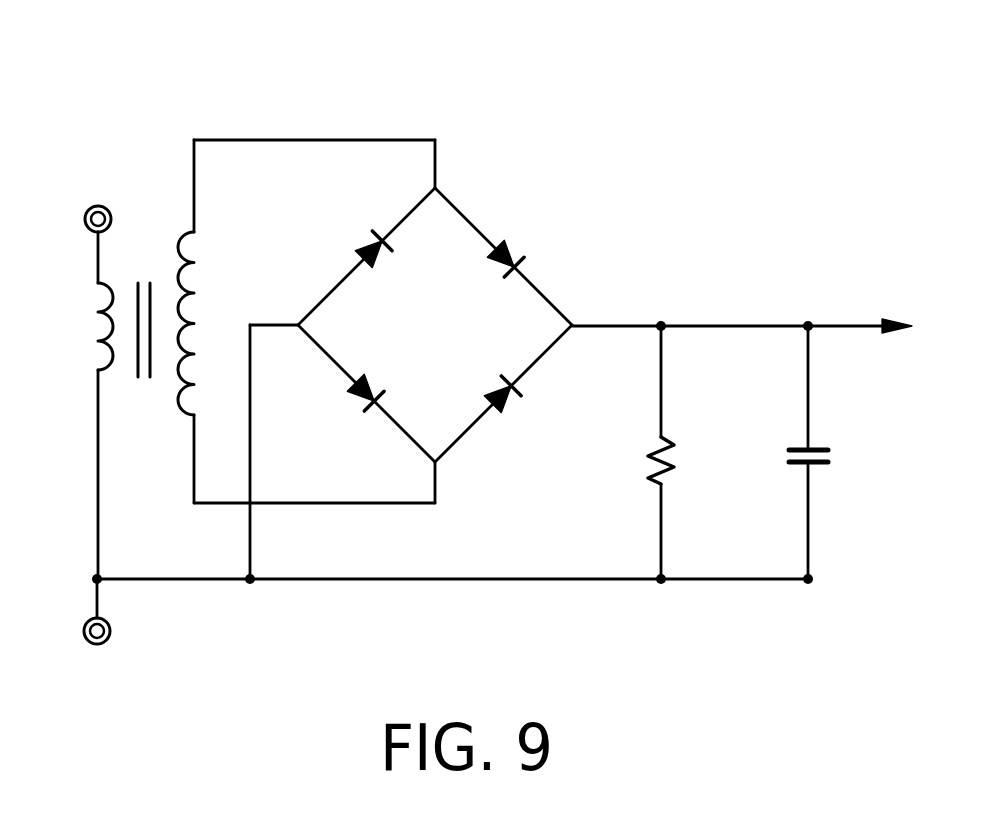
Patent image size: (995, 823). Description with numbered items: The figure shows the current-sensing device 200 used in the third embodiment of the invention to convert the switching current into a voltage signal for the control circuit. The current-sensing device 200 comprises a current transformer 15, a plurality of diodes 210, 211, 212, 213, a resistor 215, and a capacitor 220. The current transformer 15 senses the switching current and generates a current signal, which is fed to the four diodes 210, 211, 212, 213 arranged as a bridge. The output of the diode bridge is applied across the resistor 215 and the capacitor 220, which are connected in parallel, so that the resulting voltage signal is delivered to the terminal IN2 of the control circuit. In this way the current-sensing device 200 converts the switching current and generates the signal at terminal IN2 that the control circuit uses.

The current-sensing device 200 is at (823, 70).
The current transformer 15 is at (151, 220).
The diode 210 is at (513, 240).
The diode 211 is at (352, 246).
The diode 212 is at (510, 408).
The diode 213 is at (352, 406).
The resistor 215 is at (682, 462).
The capacitor 220 is at (832, 458).